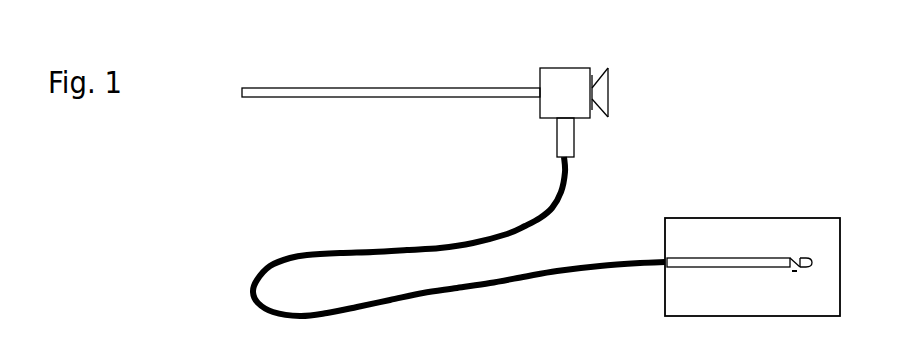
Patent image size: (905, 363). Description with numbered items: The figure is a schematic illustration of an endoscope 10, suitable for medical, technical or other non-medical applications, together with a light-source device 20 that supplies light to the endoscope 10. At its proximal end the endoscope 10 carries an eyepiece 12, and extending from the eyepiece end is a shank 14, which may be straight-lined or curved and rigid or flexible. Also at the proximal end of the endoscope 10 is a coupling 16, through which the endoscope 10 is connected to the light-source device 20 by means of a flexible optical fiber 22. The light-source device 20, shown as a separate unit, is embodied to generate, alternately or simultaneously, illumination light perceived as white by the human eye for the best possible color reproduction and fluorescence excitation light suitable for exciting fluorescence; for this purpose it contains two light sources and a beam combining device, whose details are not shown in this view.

The endoscope 10 is at (706, 80).
The eyepiece 12 is at (608, 95).
The shank 14 is at (417, 97).
The coupling 16 is at (570, 144).
The light-source device 20 is at (767, 218).
The flexible optical fiber 22 is at (300, 254).